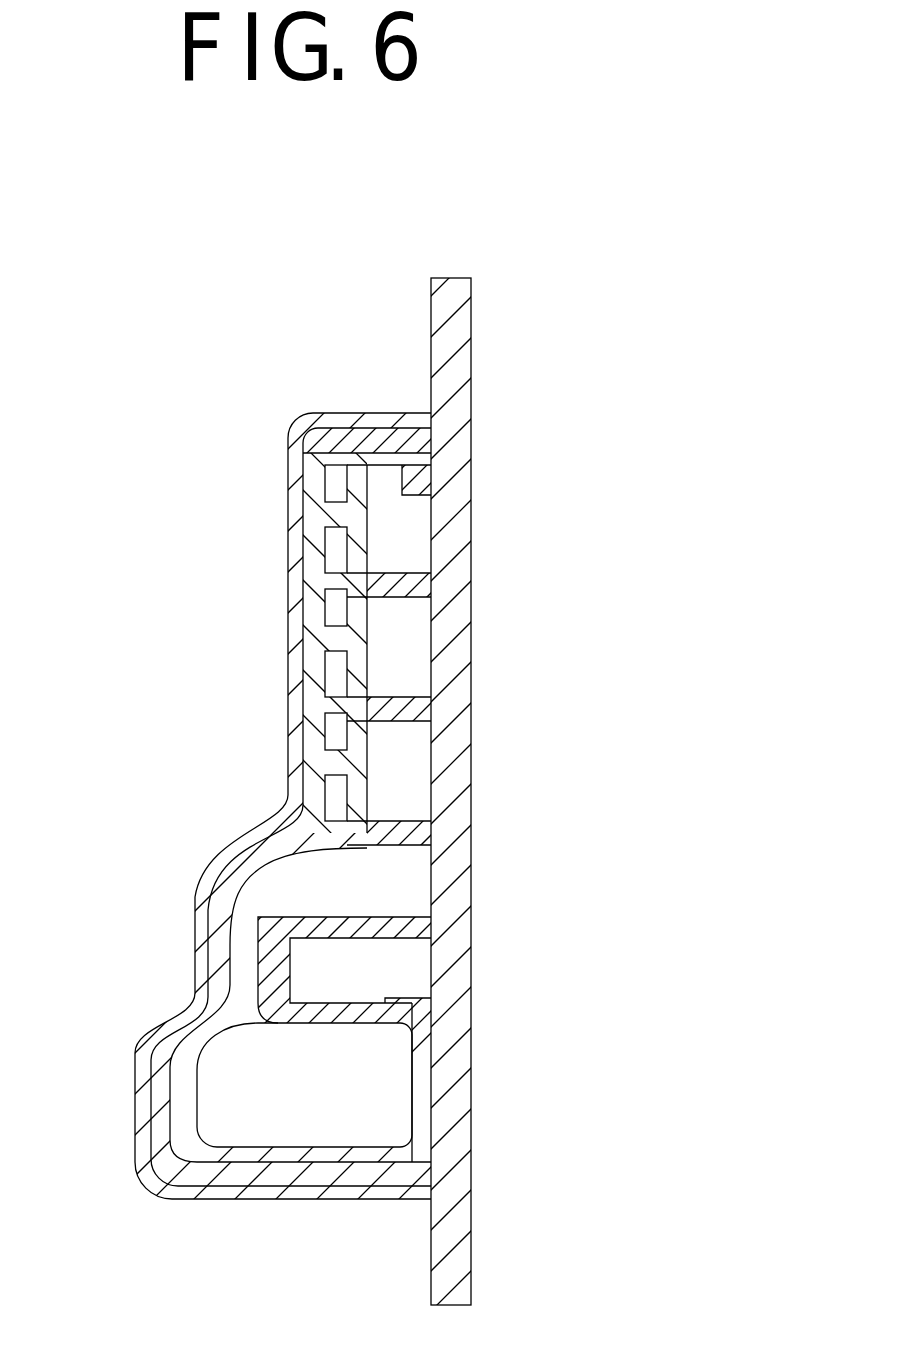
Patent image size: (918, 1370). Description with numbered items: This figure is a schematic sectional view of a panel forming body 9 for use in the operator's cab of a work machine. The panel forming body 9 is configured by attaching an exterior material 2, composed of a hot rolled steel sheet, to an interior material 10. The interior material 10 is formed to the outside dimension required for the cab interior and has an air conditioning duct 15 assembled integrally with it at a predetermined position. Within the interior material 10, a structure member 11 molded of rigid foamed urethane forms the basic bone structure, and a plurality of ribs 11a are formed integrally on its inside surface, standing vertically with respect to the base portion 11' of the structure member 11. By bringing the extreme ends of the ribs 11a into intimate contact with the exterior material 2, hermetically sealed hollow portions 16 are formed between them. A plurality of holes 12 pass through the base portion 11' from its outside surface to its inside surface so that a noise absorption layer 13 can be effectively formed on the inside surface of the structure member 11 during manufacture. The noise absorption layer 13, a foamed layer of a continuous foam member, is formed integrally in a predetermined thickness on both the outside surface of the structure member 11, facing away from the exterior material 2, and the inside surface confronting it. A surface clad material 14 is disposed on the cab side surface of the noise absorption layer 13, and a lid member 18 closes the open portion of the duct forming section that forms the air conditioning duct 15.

The panel forming body 9 is at (533, 273).
The exterior material 2 is at (471, 325).
The interior material 10 is at (280, 450).
The structure member 11 is at (459, 790).
The base portion 11' is at (243, 649).
The ribs 11a is at (373, 562).
The holes 12 is at (350, 528).
The noise absorption layer 13 is at (405, 484).
The surface clad material 14 is at (160, 1020).
The air conditioning duct 15 is at (250, 1098).
The hollow portions 16 is at (428, 617).
The lid member 18 is at (431, 1075).